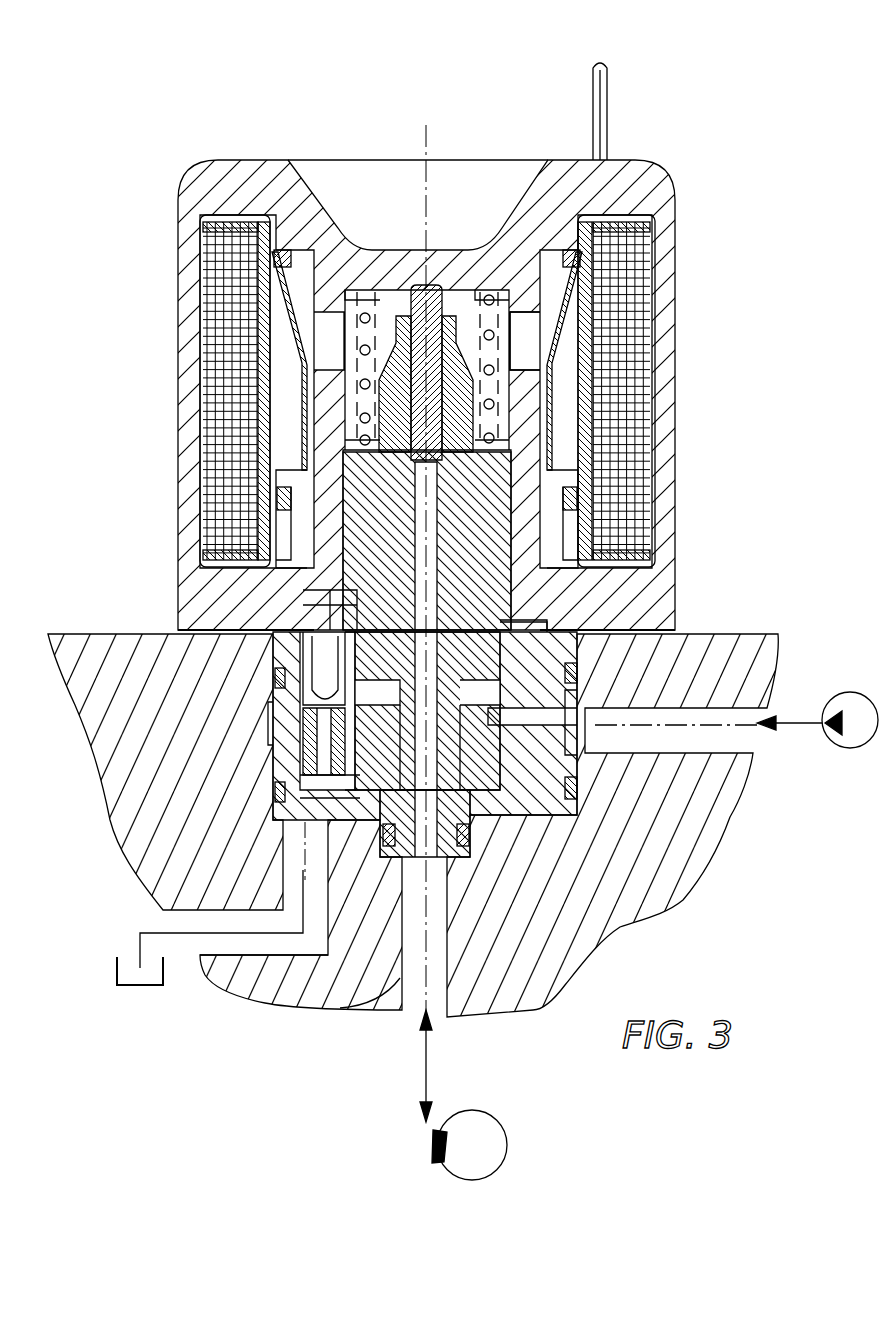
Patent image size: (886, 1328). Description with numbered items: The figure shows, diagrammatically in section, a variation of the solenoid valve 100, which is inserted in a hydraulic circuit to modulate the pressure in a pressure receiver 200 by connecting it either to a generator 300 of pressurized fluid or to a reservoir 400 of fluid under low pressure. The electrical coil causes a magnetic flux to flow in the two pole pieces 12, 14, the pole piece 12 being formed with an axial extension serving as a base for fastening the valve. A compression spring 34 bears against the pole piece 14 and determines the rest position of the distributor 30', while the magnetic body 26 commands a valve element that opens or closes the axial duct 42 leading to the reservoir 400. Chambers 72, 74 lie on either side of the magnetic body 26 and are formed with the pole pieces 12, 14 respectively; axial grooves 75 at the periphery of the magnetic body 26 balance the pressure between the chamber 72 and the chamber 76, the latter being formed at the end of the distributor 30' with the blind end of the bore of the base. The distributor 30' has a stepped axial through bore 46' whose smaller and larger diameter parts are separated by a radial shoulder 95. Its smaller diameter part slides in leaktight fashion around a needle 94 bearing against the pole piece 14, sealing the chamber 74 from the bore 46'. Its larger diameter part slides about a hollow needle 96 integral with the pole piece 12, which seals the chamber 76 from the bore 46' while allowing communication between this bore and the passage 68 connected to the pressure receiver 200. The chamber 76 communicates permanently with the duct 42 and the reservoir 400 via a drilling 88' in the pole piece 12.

The solenoid valve 100 is at (678, 156).
The pole piece 14 is at (332, 178).
The needle 94 is at (431, 286).
The chamber 74 is at (527, 322).
The compression spring 34 is at (365, 320).
The distributor 30' is at (351, 360).
The magnetic body 26 is at (300, 455).
The stepped axial through bore 46' is at (333, 541).
The pole piece 12 is at (253, 596).
The axial grooves 75 is at (540, 412).
The radial shoulder 95 is at (500, 598).
The chamber 72 is at (530, 628).
The axial duct 42 is at (327, 752).
The drilling 88' is at (319, 764).
The chamber 76 is at (487, 793).
The hollow needle 96 is at (448, 862).
The passage 68 is at (356, 1008).
The reservoir 400 is at (130, 987).
The generator 300 is at (845, 735).
The pressure receiver 200 is at (440, 1145).